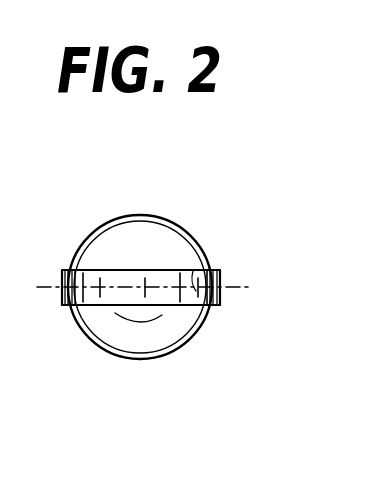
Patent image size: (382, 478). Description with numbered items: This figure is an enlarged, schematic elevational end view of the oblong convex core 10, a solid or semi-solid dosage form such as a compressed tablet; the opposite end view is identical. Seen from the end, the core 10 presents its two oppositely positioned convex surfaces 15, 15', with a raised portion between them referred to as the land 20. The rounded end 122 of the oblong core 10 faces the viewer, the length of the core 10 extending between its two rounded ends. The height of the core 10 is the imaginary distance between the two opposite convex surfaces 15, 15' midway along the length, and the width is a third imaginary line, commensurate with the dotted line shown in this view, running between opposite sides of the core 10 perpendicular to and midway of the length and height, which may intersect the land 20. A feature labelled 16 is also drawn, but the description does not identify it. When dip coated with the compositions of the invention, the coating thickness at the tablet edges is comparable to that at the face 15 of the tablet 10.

The oblong convex core 10 is at (188, 210).
The convex surface 15 is at (139, 255).
The convex surface 15' is at (146, 360).
The slot 16 is at (207, 262).
The land 20 is at (220, 302).
The rounded end 122 is at (123, 322).